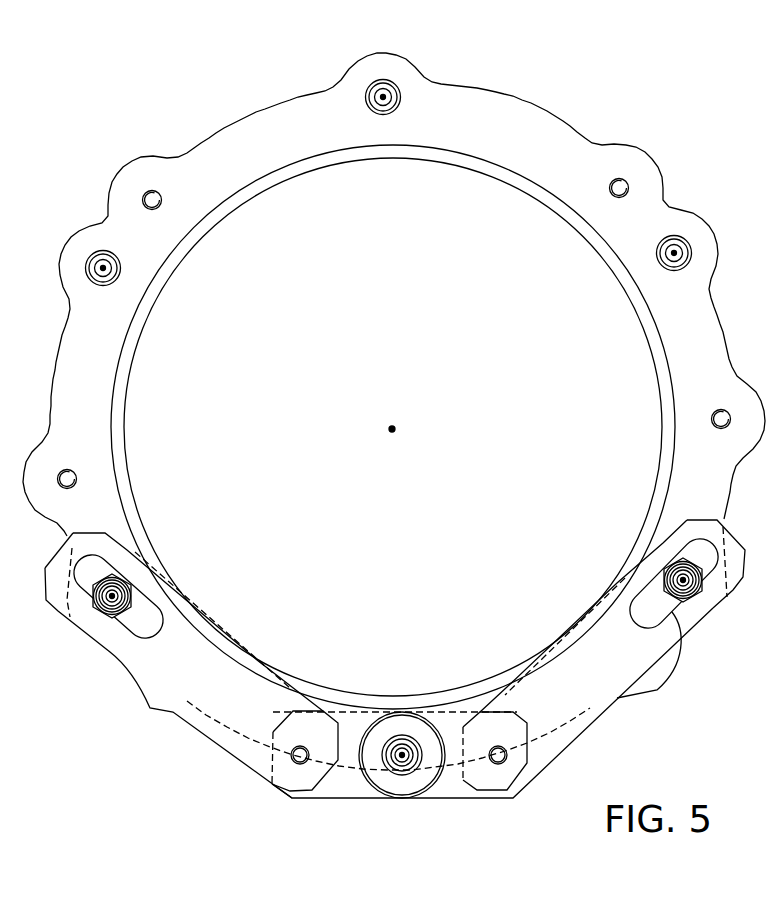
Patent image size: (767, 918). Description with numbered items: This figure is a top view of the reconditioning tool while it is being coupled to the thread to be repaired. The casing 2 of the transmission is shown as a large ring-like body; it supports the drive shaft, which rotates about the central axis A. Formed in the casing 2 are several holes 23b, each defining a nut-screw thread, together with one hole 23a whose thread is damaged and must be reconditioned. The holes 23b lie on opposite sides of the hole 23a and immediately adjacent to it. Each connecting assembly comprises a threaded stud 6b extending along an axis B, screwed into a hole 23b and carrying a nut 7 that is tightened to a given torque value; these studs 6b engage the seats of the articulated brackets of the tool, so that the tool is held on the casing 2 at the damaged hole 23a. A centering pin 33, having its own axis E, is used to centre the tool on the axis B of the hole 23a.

The casing 2 is at (517, 133).
The holes 23b is at (383, 114).
The hole 23a is at (402, 776).
The centering pin 33 is at (422, 780).
The nut 7 is at (88, 598).
The threaded stud 6b is at (100, 621).
The axis A is at (392, 429).
The axis B is at (383, 97).